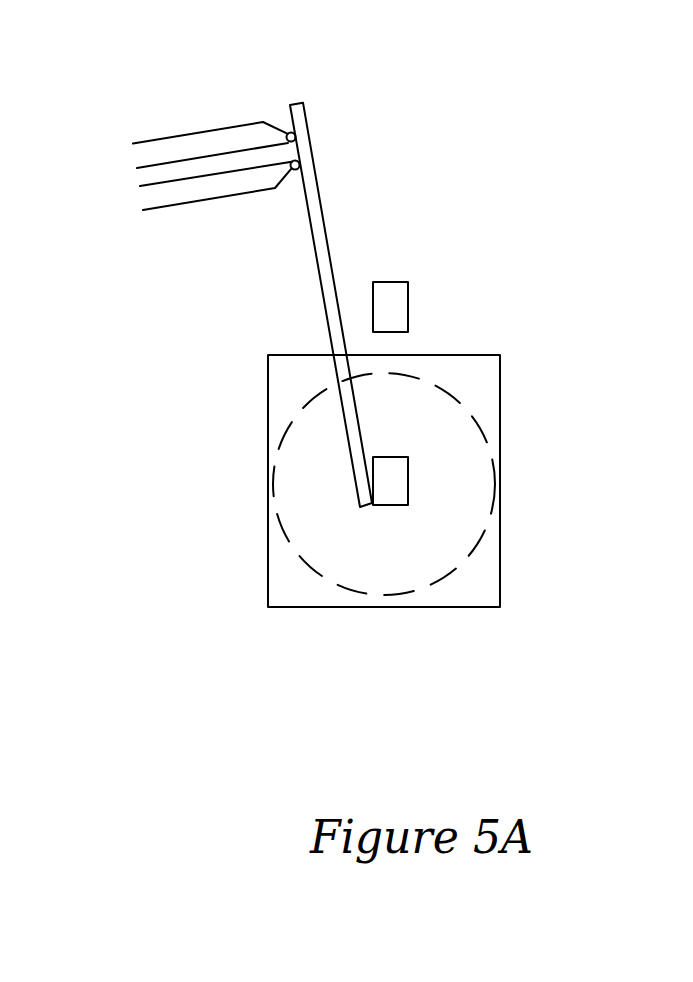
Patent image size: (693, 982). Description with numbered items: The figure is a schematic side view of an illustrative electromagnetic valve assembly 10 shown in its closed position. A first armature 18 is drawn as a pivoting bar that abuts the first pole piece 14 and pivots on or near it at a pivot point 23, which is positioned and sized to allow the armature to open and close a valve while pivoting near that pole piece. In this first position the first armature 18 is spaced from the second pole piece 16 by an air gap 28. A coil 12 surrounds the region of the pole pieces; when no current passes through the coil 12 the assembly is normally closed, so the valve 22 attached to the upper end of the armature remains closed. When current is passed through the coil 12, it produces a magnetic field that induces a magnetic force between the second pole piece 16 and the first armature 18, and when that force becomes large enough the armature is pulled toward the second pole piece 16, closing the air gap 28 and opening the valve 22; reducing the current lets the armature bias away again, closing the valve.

The electromagnetic valve assembly 10 is at (540, 70).
The coil 12 is at (412, 481).
The first pole piece 14 is at (403, 480).
The second pole piece 16 is at (402, 307).
The first armature 18 is at (313, 197).
The valve 22 is at (190, 197).
The pivot point 23 is at (369, 530).
The air gap 28 is at (355, 302).